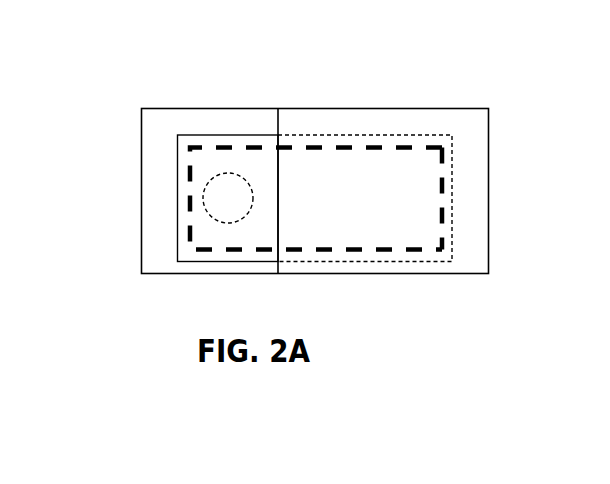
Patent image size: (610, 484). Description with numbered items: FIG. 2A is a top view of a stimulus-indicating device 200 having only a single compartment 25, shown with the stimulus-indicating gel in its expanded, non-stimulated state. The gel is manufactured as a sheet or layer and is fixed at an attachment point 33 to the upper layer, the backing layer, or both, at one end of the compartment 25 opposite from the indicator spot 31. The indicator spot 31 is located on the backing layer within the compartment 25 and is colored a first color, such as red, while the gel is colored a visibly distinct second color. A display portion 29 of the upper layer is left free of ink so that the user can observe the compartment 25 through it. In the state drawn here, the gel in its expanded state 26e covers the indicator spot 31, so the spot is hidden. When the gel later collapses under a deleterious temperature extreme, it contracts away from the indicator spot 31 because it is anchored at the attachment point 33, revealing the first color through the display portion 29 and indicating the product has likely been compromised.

The stimulus-indicating device 200 is at (490, 121).
The display portion 29 is at (165, 147).
The indicator spot 31 is at (227, 197).
The attachment point 33 is at (442, 172).
The compartment 25 is at (330, 261).
The gel in expanded state 26e is at (329, 186).